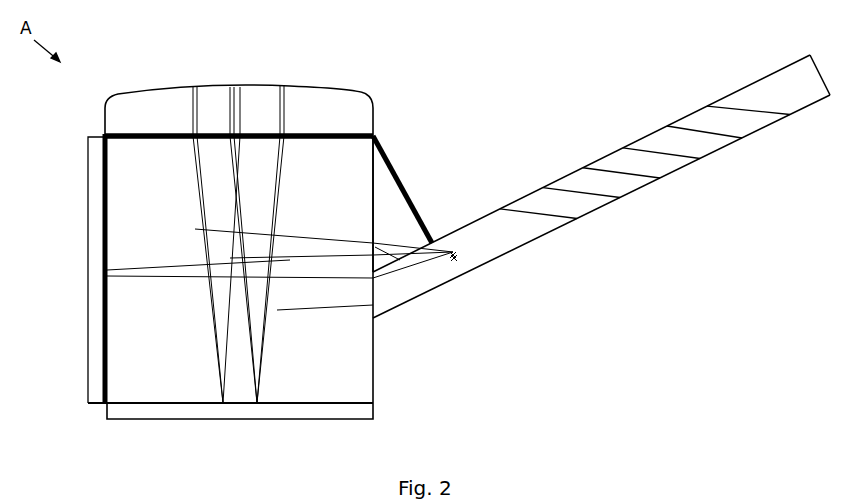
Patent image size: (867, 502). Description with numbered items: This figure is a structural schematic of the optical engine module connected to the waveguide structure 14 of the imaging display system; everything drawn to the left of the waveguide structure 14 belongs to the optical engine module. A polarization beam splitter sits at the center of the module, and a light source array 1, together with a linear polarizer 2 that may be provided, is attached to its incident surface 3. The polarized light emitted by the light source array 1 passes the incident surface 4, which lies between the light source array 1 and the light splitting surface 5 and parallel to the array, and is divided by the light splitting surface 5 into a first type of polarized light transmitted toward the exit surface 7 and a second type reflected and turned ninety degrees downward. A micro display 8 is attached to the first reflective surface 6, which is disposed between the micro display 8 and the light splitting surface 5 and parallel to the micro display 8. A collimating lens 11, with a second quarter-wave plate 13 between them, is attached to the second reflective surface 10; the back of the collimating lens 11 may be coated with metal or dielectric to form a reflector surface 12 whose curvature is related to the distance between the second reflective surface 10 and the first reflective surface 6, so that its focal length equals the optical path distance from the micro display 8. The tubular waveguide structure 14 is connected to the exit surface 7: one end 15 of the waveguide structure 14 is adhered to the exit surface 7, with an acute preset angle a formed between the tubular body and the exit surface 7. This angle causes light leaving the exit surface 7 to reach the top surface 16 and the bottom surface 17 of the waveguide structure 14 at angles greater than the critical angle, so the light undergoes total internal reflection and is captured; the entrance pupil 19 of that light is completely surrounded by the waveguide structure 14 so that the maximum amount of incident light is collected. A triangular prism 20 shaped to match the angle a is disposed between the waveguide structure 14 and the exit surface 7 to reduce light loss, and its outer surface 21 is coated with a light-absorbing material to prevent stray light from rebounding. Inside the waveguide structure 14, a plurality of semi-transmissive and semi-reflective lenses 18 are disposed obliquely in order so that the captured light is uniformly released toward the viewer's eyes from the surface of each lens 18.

The light source array 1 is at (88, 208).
The linear polarizer 2 is at (373, 403).
The incident surface 3 is at (340, 162).
The incident surface 4 is at (110, 230).
The light splitting surface 5 is at (347, 372).
The first reflective surface 6 is at (338, 408).
The exit surface 7 is at (377, 327).
The micro display 8 is at (233, 421).
The second reflective surface 10 is at (316, 140).
The collimating lens 11 is at (153, 112).
The reflector surface 12 is at (208, 87).
The second quarter-wave plate 13 is at (333, 132).
The waveguide structure 14 is at (782, 83).
The end of the waveguide structure 15 is at (377, 292).
The top surface 16 is at (733, 92).
The bottom surface 17 is at (818, 100).
The semi-transmissive and semi-reflective lenses 18 is at (760, 117).
The entrance pupil 19 is at (455, 250).
The triangular prism 20 is at (387, 193).
The outer surface of the triangular prism 21 is at (410, 197).
The angle α a is at (422, 243).